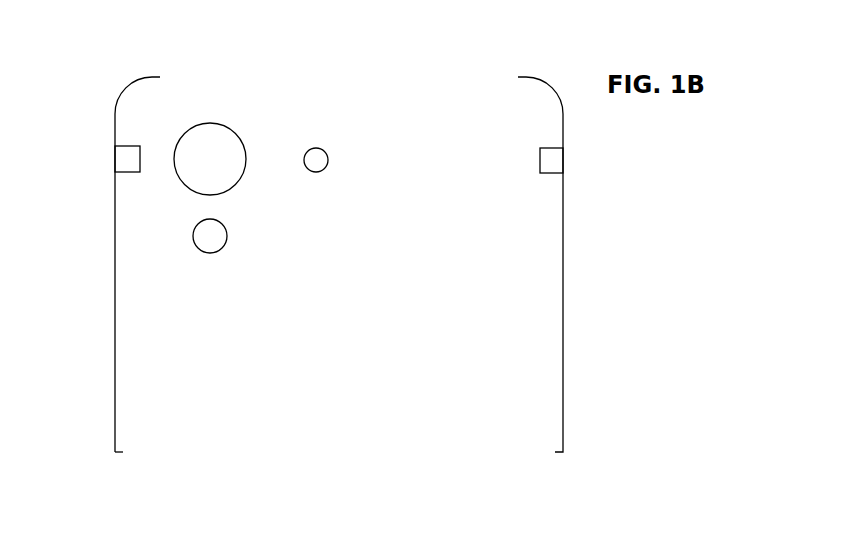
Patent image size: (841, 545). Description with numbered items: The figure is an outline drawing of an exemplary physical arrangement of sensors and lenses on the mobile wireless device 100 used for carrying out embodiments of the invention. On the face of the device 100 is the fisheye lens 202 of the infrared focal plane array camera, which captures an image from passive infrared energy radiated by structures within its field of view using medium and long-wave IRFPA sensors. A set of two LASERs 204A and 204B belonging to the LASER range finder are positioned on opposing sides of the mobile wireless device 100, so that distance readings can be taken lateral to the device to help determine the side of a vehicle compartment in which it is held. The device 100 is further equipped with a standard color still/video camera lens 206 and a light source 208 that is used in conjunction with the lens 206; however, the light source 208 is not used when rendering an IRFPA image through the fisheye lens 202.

The mobile wireless device 100 is at (563, 312).
The fisheye lens 202 is at (210, 236).
The LASER 204A is at (127, 159).
The LASER 204B is at (550, 160).
The still/video camera lens 206 is at (209, 158).
The light source 208 is at (328, 160).